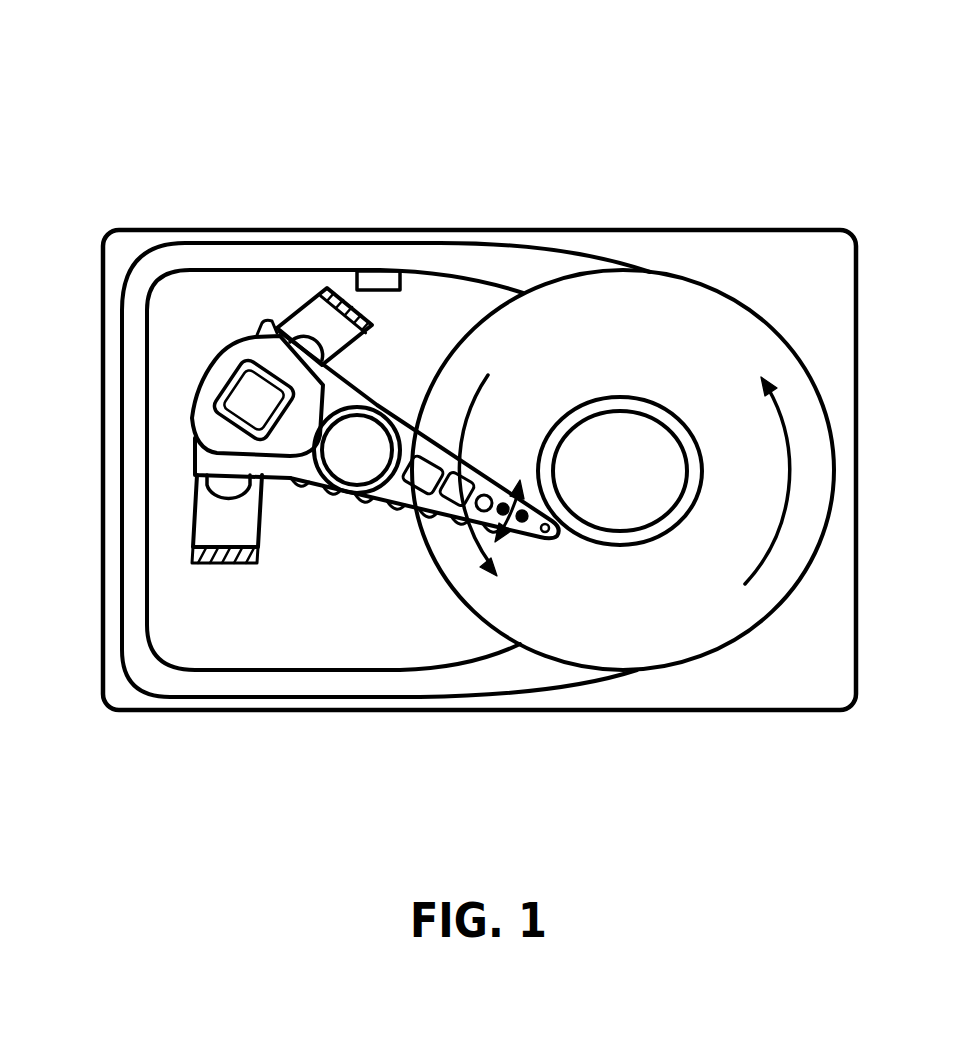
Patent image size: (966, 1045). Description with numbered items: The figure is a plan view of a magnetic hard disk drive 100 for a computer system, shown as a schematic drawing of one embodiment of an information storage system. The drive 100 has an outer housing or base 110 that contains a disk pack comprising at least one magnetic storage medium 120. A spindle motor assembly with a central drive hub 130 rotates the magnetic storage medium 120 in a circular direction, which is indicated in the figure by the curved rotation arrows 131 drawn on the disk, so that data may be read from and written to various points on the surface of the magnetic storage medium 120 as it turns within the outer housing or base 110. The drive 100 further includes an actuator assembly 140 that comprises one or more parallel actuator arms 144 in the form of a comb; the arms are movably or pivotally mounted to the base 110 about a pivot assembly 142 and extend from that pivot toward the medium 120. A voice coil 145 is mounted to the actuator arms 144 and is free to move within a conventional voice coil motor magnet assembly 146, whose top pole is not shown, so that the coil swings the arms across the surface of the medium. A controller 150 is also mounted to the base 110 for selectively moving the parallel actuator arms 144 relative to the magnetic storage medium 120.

The magnetic hard disk drive 100 is at (813, 124).
The outer housing or base 110 is at (693, 231).
The magnetic storage medium 120 is at (706, 311).
The central drive hub 130 is at (655, 400).
The disc rotation direction 131 is at (783, 430).
The actuator assembly 140 is at (273, 580).
The pivot assembly 142 is at (350, 492).
The actuator arm 144 is at (414, 430).
The voice coil 145 is at (220, 352).
The voice coil motor magnet assembly 146 is at (312, 315).
The controller 150 is at (403, 298).